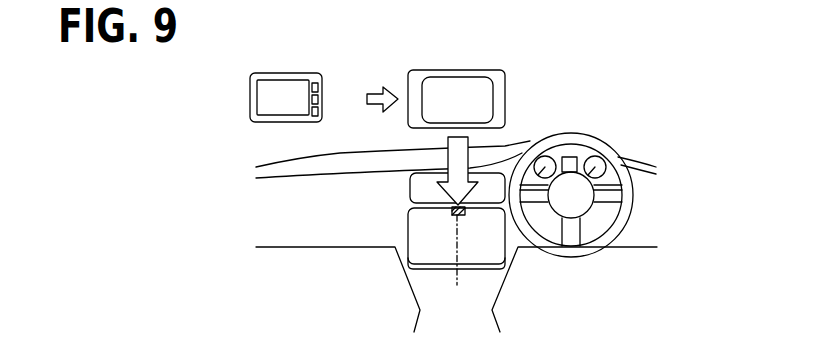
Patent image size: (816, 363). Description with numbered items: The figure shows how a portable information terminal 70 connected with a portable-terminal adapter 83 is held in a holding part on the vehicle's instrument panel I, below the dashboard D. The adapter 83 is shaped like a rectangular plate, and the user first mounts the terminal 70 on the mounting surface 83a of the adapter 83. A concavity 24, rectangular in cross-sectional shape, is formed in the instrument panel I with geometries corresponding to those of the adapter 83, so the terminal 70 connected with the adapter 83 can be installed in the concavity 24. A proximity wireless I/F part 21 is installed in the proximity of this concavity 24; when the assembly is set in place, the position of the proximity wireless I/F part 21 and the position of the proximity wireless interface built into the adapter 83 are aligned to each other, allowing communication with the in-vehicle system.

The portable information terminal 70 is at (270, 73).
The portable-terminal adapter 83 is at (433, 70).
The mounting surface 83a is at (479, 103).
The concavity 24 is at (415, 255).
The proximity wireless I/F part 21 is at (466, 214).
The dashboard D is at (332, 162).
The instrument panel I is at (383, 186).